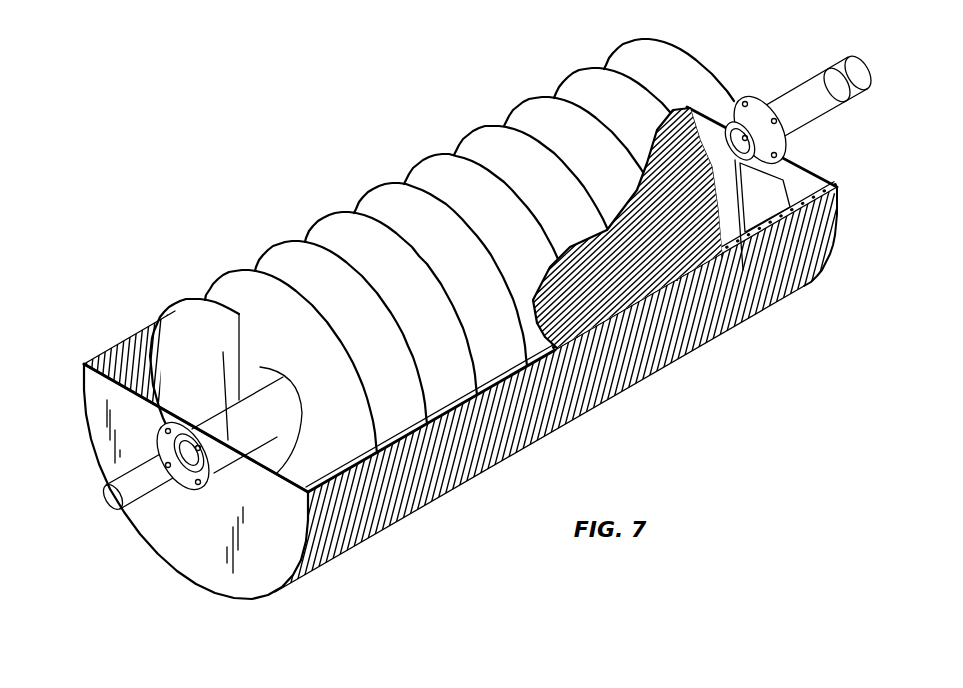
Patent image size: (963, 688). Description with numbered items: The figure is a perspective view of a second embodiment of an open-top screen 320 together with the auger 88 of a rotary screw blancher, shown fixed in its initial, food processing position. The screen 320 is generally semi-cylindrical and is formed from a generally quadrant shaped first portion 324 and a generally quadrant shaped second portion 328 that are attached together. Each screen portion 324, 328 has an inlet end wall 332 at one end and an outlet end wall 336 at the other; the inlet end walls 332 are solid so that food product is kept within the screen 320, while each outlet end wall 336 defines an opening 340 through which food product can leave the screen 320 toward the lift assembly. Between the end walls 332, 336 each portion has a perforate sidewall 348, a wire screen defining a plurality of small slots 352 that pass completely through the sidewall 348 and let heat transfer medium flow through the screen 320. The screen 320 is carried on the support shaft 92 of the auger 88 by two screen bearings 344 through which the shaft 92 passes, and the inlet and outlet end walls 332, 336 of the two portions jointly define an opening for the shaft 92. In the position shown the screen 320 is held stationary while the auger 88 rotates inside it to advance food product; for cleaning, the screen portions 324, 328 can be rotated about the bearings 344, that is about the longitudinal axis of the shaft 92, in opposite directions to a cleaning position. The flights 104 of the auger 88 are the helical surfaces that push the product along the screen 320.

The auger 88 is at (369, 180).
The support shaft 92 is at (137, 478).
The flights 104 is at (537, 128).
The open-top screen 320 is at (171, 590).
The first portion 324 is at (117, 338).
The second portion 328 is at (350, 558).
The inlet end wall 332 is at (150, 535).
The outlet end wall 336 is at (694, 117).
The opening 340 is at (578, 75).
The screen bearing 344 is at (160, 432).
The perforate sidewall 348 is at (172, 350).
The slots 352 is at (446, 476).